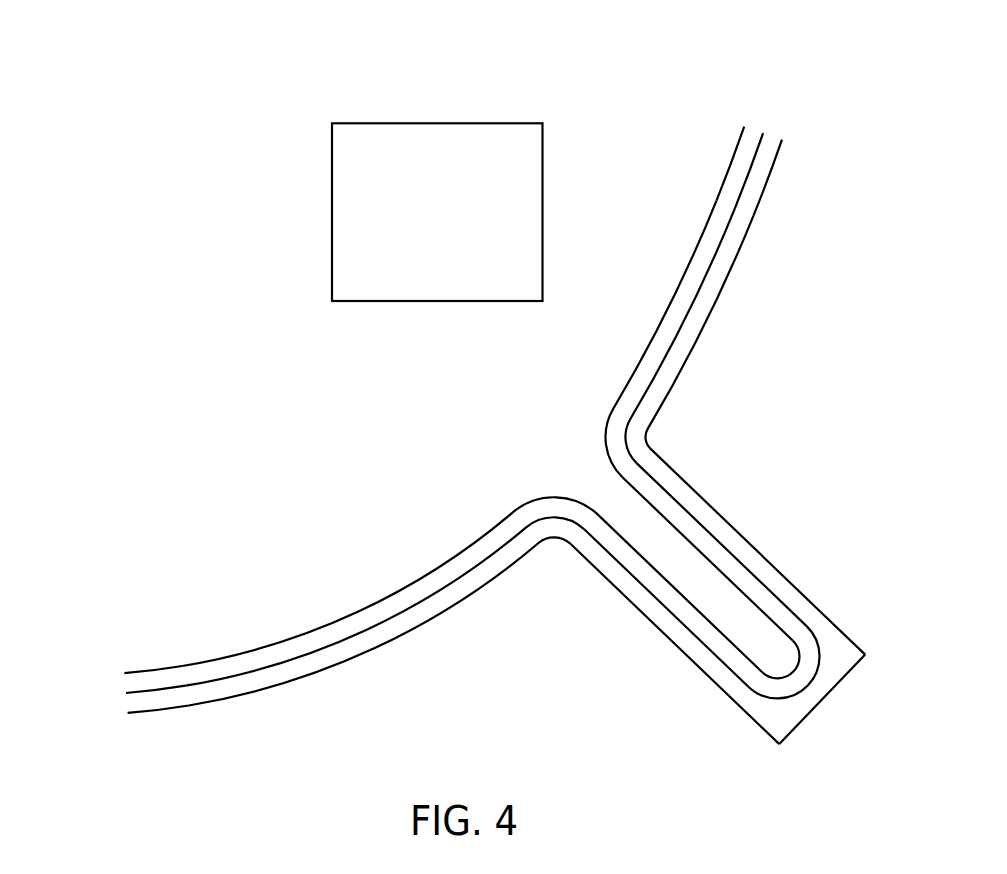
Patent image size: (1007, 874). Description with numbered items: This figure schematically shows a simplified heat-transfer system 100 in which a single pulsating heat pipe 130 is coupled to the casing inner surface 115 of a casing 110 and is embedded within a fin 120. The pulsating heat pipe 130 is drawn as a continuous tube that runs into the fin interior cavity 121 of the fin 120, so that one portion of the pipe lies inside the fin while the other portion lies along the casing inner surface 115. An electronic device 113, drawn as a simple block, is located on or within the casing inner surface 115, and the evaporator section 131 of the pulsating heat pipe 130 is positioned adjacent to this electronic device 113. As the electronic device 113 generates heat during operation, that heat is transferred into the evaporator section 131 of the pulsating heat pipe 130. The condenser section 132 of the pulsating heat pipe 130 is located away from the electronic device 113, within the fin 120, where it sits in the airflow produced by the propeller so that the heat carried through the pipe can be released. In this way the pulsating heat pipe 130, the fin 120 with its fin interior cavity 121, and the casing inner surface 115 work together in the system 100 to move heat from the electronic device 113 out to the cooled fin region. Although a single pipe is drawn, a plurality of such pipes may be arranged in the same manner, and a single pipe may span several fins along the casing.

The heat exchanger assembly 100 is at (862, 173).
The tube 110 is at (710, 357).
The electronic device 113 is at (449, 118).
The casing inner surface 115 is at (120, 703).
The fin 120 is at (816, 715).
The fin interior cavity 121 is at (777, 728).
The pulsating heat pipe 130 is at (757, 123).
The evaporator section 131 is at (220, 653).
The condenser section 132 is at (738, 575).